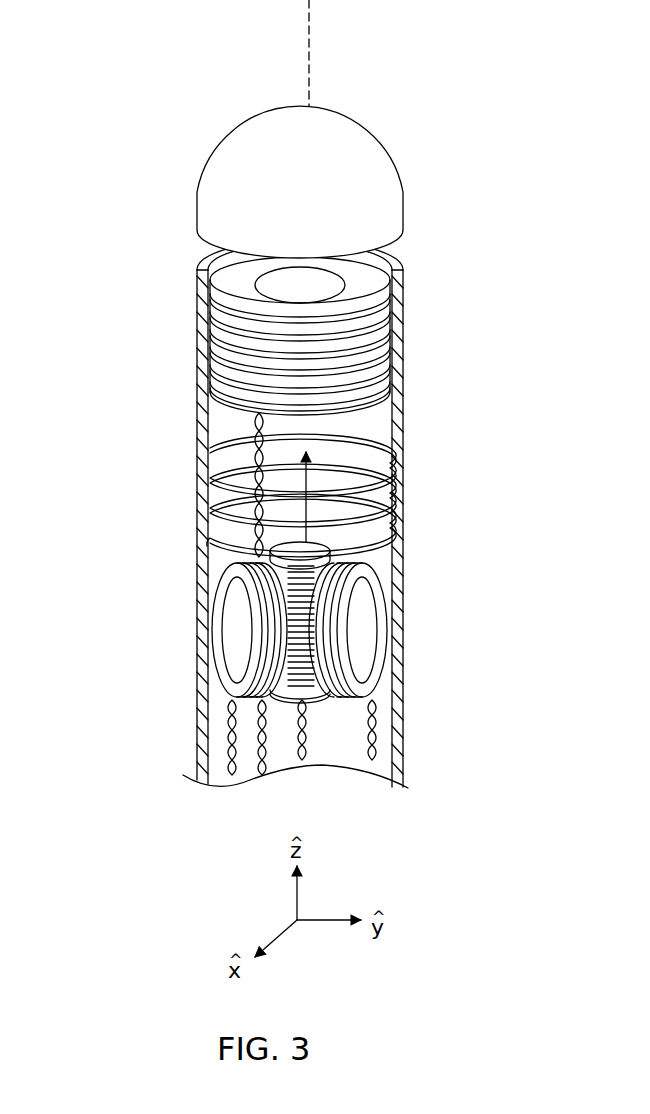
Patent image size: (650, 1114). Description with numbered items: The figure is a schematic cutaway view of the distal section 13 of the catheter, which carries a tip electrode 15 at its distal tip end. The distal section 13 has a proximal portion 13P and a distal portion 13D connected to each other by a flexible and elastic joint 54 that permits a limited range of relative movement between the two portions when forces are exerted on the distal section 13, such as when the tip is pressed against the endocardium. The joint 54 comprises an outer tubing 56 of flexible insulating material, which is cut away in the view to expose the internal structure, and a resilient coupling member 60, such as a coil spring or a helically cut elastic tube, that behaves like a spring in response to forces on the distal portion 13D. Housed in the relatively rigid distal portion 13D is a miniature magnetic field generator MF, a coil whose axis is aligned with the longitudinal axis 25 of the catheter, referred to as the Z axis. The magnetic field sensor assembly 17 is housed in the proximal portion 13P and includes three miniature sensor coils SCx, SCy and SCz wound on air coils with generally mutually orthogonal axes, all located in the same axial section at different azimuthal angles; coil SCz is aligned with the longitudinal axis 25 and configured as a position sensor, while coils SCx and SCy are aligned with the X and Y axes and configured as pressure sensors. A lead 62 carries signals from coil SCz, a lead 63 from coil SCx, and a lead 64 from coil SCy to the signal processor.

The distal section 13 is at (302, 112).
The distal portion 13D is at (197, 374).
The proximal portion 13P is at (197, 712).
The tip electrode 15 is at (342, 148).
The magnetic field sensor assembly 17 is at (421, 555).
The longitudinal axis 25 is at (312, 40).
The joint 54 is at (407, 497).
The outer tubing 56 is at (403, 398).
The resilient coupling member 60 is at (385, 440).
The lead 62 is at (303, 715).
The lead 63 is at (228, 748).
The lead 64 is at (372, 745).
The magnetic field generator MF is at (365, 328).
The sensor coil SCx is at (240, 628).
The sensor coil SCy is at (360, 634).
The sensor coil SCz is at (303, 565).